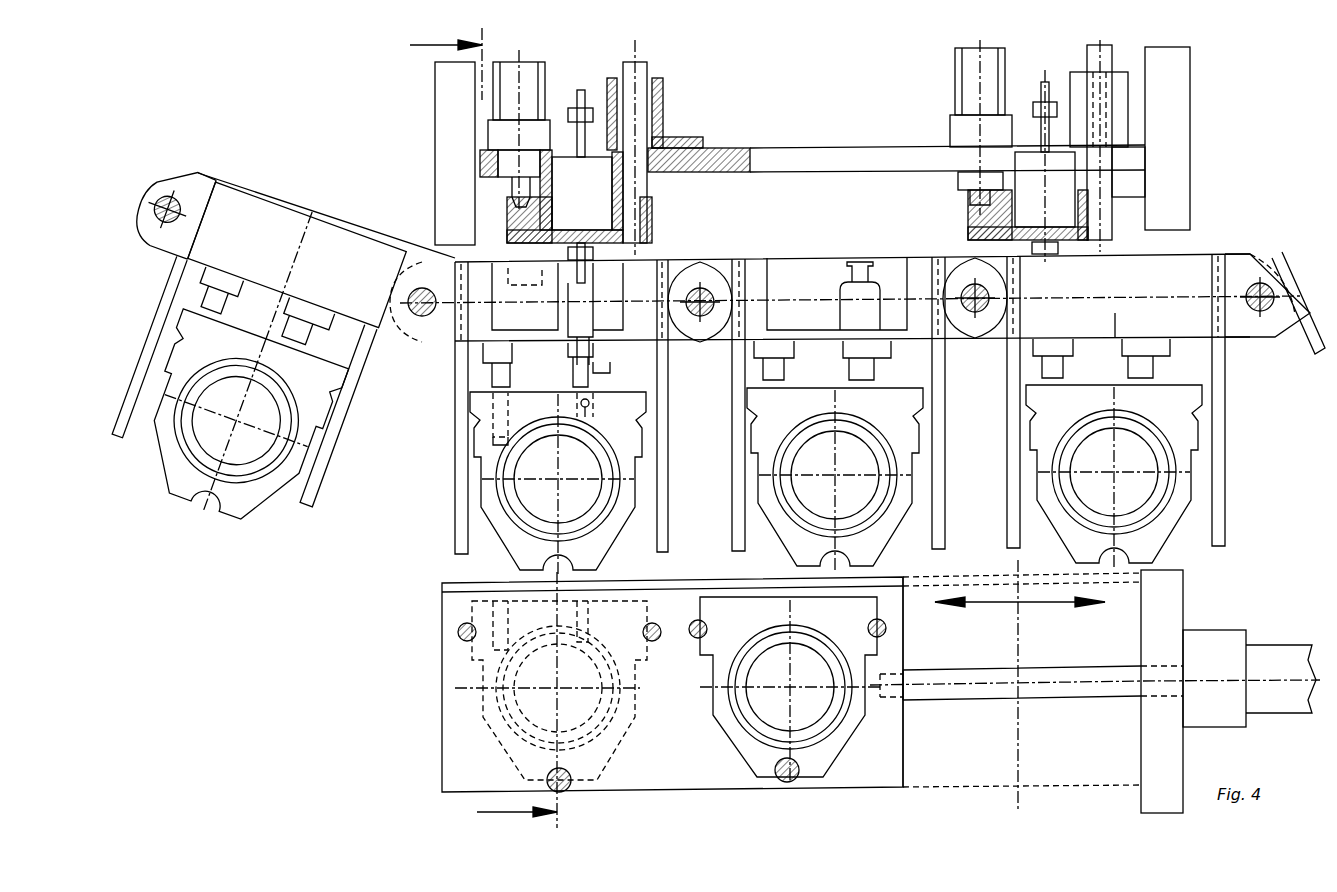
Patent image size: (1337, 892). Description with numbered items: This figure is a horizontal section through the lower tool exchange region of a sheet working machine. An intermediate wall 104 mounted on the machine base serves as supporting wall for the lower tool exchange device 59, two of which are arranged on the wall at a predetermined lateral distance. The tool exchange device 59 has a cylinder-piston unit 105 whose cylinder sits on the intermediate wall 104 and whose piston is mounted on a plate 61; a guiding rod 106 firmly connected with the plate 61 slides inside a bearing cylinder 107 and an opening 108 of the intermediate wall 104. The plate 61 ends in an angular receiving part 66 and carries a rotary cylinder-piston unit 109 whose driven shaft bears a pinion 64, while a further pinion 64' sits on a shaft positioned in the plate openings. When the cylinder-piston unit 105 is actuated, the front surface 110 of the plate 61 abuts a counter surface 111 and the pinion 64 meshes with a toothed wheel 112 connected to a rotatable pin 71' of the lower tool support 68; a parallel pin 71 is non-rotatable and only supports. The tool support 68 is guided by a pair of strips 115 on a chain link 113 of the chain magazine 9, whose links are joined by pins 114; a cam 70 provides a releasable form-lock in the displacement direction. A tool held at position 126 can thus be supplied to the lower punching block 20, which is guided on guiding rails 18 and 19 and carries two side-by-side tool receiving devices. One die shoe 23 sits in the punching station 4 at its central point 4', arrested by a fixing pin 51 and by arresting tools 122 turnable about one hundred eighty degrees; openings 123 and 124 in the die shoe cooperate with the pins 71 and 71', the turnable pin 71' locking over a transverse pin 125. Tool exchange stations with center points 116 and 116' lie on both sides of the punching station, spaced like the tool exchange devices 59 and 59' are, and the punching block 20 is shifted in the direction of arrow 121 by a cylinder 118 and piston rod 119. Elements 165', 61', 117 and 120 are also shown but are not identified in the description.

The chain link 113 is at (184, 188).
The pin 114 is at (165, 203).
The counter surface 111 is at (330, 212).
The receiving part 66 is at (388, 197).
The cam 70 is at (470, 232).
The plate 61 is at (464, 147).
The front surface 110 is at (480, 212).
The cylinder-piston unit 105 is at (528, 72).
The lower tool exchange device 59 is at (581, 141).
The guiding rod 106 is at (640, 68).
The bearing cylinder 107 is at (668, 112).
The rotary cylinder-piston unit 109 is at (592, 188).
The opening 108 is at (720, 152).
The intermediate wall 104 is at (890, 155).
The pneumatic cylinder 165' is at (961, 127).
The arrow 59' is at (1045, 136).
The clamping block 61' is at (996, 215).
The pinion 64' is at (639, 212).
The pinion 64 is at (688, 284).
The toothed wheel 112 is at (598, 255).
The chain magazine 9 is at (160, 288).
The lower tool support 68 is at (470, 345).
The pin 71 is at (452, 379).
The pin 71' is at (497, 383).
The opening 123 is at (490, 418).
The pin 125 is at (525, 448).
The opening 124 is at (580, 405).
The position 126 is at (645, 573).
The strip 115 is at (122, 440).
The die shoe 23 is at (520, 545).
The guiding rail 18 is at (440, 596).
The arresting tool 122 is at (460, 633).
The center point 116 is at (457, 688).
The guiding rail 19 is at (440, 784).
The fixing pin 51 is at (563, 790).
The punching station 4 is at (790, 722).
The central point 4' is at (769, 710).
The lower punching block 20 is at (882, 767).
The center point 116' is at (990, 689).
The piston rod 119 is at (1090, 690).
The end plate 117 is at (1165, 603).
The cylinder 118 is at (1258, 668).
The bore 120 is at (1160, 700).
The arrow 121 is at (996, 607).